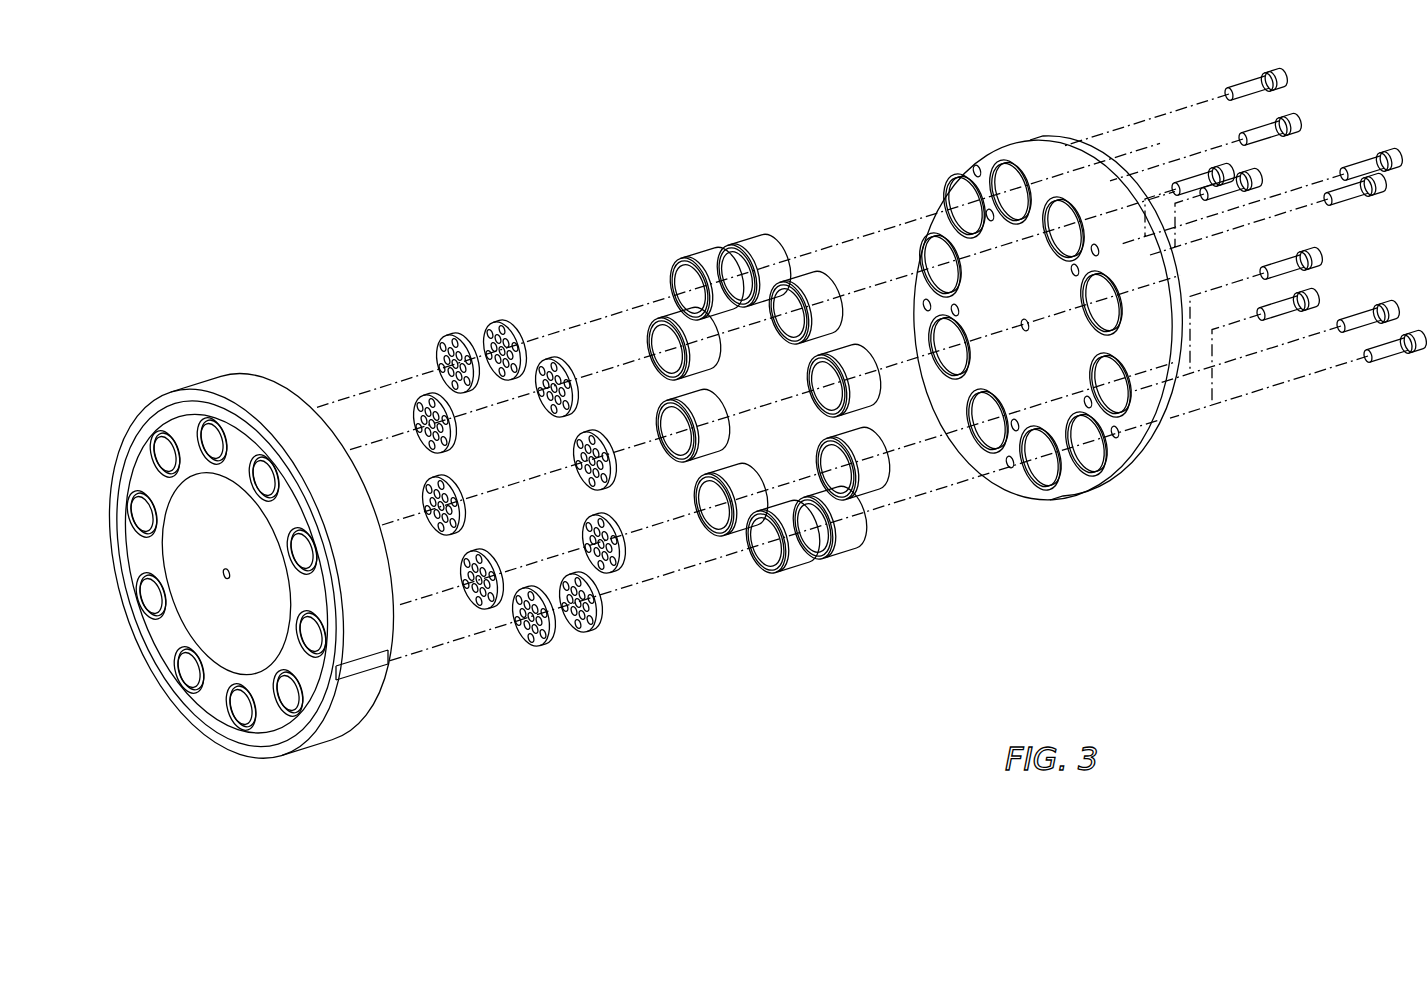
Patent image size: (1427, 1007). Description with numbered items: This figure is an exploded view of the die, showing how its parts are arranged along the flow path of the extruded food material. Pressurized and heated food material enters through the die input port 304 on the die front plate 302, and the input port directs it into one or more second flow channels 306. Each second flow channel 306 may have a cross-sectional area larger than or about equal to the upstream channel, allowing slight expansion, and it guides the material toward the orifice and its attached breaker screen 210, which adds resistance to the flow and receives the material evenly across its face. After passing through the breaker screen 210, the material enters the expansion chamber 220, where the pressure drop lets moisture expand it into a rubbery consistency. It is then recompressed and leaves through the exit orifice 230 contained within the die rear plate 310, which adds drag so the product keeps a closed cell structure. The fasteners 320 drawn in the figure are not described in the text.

The breaker screen 210 is at (548, 359).
The expansion chamber 220 is at (827, 470).
The exit orifice 230 is at (884, 386).
The die front plate 302 is at (378, 703).
The die input port 304 is at (277, 707).
The second flow channel 306 is at (312, 632).
The die rear plate 310 is at (1000, 140).
The bolts 320 is at (1390, 348).